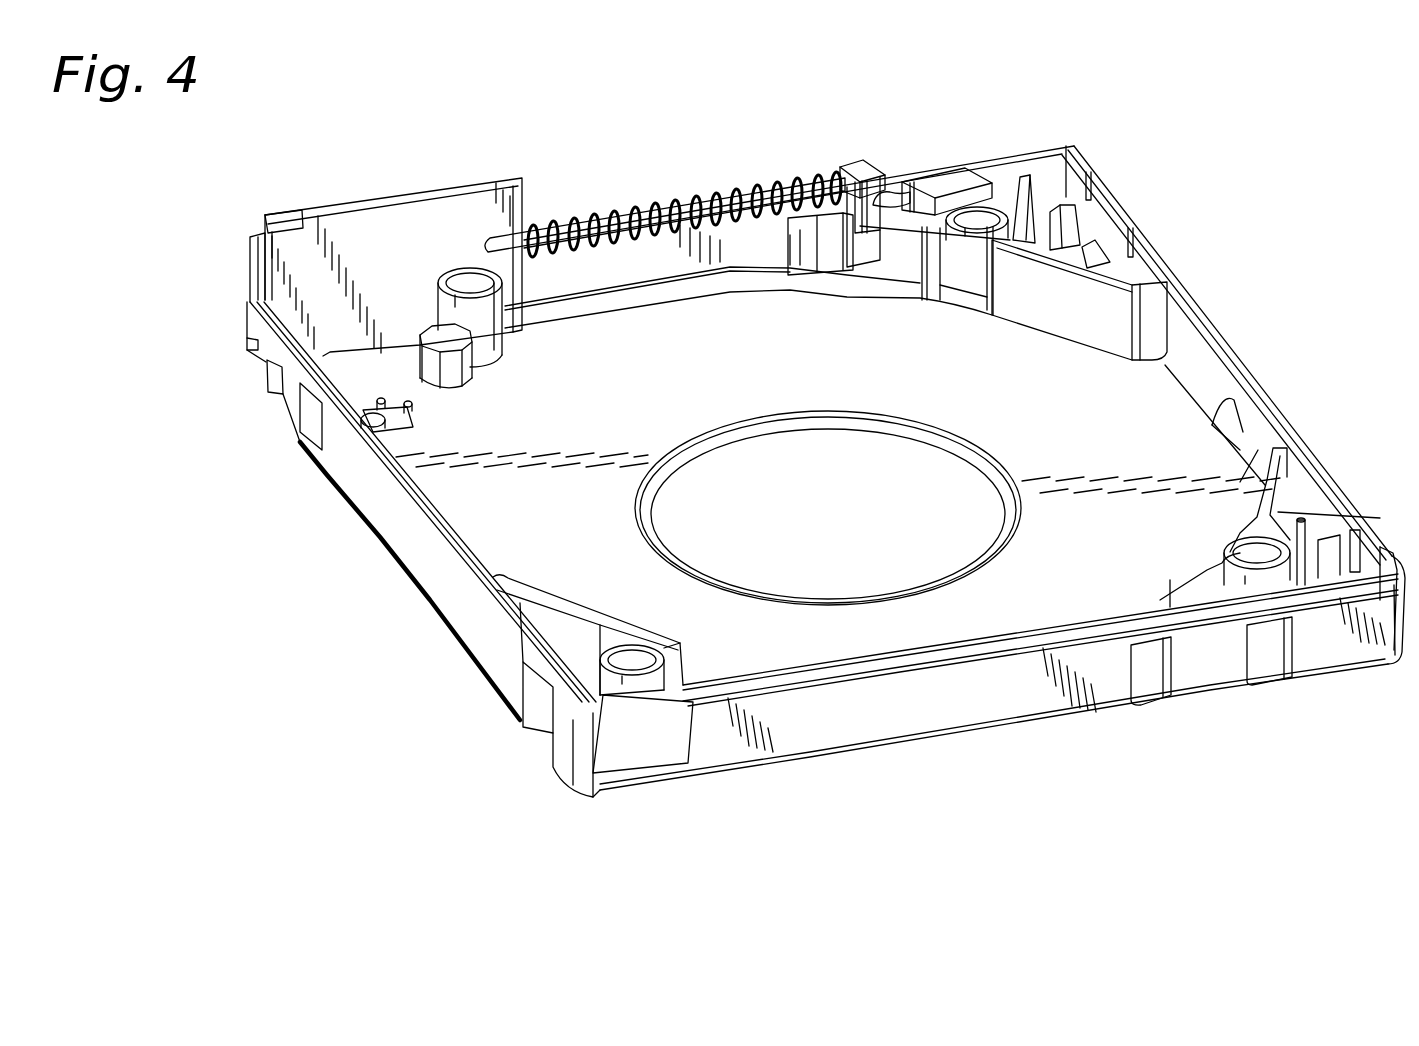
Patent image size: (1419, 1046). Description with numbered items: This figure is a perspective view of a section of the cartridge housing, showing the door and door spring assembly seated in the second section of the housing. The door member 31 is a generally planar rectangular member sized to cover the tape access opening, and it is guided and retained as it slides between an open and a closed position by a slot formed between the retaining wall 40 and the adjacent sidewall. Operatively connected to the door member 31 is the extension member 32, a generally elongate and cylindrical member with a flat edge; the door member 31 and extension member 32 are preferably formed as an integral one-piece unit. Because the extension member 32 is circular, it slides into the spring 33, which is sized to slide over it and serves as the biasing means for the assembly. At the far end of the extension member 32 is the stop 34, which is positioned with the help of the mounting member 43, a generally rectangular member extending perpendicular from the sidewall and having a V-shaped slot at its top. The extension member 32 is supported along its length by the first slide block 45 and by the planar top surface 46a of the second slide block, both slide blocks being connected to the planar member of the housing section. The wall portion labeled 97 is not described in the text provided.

The door member 31 is at (418, 195).
The extension member 32 is at (652, 190).
The spring 33 is at (748, 182).
The stop 34 is at (858, 162).
The retaining wall 40 is at (647, 302).
The mounting member 43 is at (886, 198).
The first slide block 45 is at (838, 248).
The planar top surface 46a is at (963, 178).
The wall 97 is at (1062, 310).